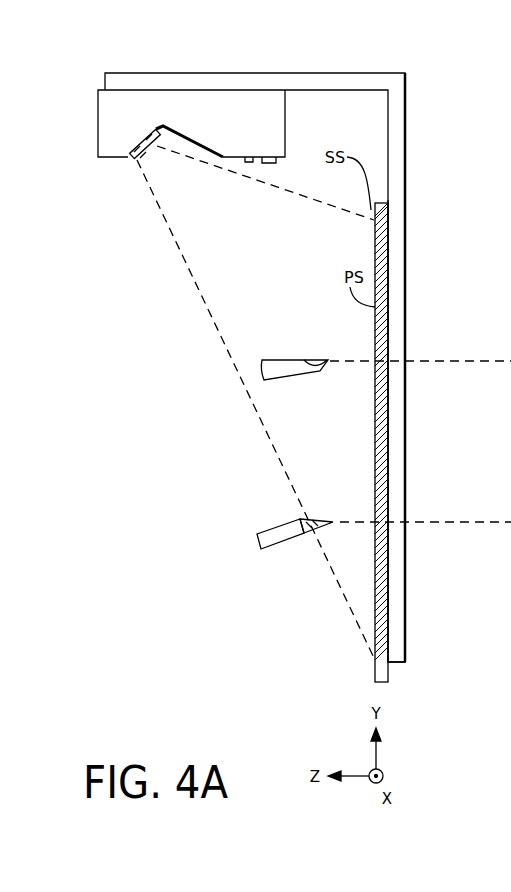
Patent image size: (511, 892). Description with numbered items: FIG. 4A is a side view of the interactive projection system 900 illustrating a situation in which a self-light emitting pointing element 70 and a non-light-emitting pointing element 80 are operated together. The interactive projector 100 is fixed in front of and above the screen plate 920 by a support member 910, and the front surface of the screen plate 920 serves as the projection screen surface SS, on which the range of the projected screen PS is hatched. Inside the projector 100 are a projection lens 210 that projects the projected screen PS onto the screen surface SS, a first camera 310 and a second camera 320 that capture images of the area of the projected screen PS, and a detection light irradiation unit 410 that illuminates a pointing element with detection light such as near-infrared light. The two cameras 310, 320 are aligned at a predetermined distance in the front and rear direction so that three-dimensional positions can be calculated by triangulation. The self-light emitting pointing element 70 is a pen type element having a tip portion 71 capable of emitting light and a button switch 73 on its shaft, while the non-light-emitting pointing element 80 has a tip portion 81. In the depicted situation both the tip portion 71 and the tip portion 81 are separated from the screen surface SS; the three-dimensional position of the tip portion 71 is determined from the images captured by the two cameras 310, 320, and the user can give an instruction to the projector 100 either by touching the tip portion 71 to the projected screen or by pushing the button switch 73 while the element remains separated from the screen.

The interactive projector 100 is at (232, 100).
The interactive projection system 900 is at (440, 104).
The support member 910 is at (400, 197).
The screen plate 920 is at (390, 216).
The first camera 310 is at (135, 150).
The projection lens 210 is at (133, 163).
The second camera 320 is at (283, 160).
The detection light irradiation unit 410 is at (249, 165).
The non-light-emitting pointing element 80 is at (288, 362).
The tip portion 81 is at (324, 364).
The self-light emitting pointing element 70 is at (257, 541).
The tip portion 71 is at (325, 521).
The button switch 73 is at (300, 534).